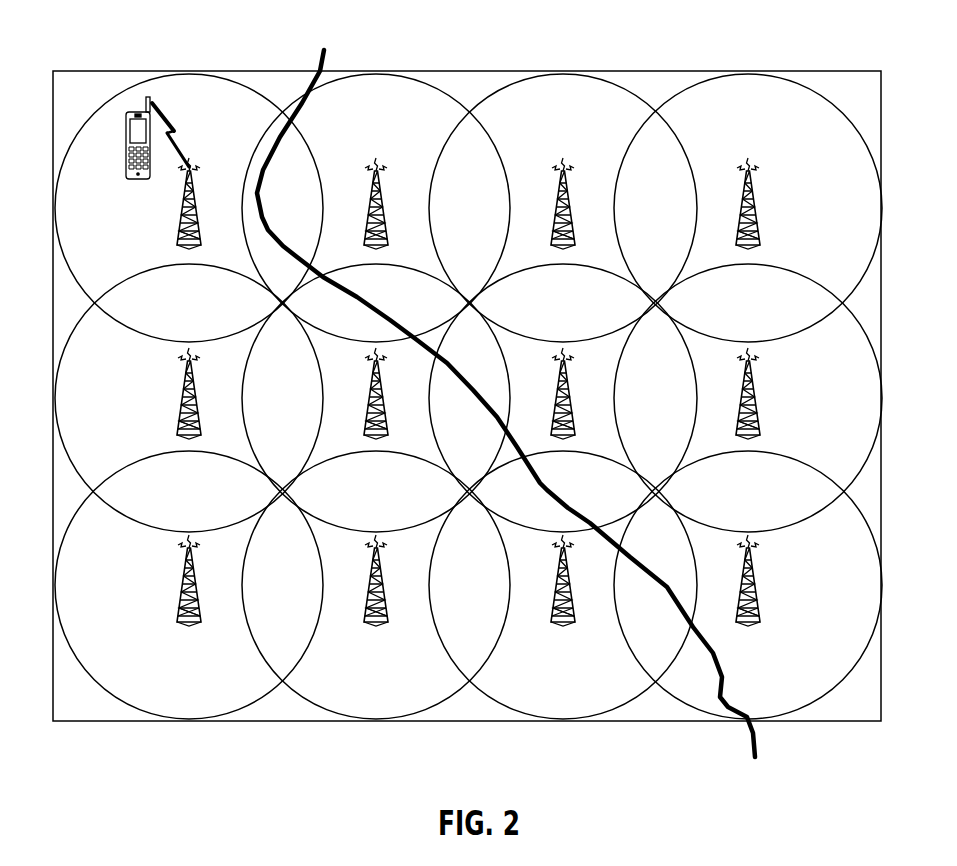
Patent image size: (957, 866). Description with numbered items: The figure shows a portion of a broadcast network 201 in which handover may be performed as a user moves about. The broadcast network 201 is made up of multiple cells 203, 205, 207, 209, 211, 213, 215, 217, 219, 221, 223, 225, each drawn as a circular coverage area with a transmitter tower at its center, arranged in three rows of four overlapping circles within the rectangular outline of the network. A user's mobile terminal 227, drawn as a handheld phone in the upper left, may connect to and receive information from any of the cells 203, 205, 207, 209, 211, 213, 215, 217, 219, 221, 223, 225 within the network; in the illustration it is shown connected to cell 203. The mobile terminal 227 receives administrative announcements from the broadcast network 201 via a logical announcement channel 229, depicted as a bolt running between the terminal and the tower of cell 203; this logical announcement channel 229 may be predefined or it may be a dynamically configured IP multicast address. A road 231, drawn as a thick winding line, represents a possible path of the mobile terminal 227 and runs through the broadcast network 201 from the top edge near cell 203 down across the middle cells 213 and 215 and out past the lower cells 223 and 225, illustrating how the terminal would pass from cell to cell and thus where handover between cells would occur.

The broadcast network 201 is at (858, 721).
The cell 203 is at (235, 71).
The cell 205 is at (425, 71).
The cell 207 is at (605, 71).
The cell 209 is at (788, 71).
The cell 211 is at (63, 337).
The cell 213 is at (355, 263).
The cell 215 is at (563, 262).
The cell 217 is at (872, 448).
The cell 219 is at (148, 721).
The cell 221 is at (335, 721).
The cell 223 is at (520, 721).
The cell 225 is at (708, 721).
The mobile terminal 227 is at (137, 180).
The logical announcement channel 229 is at (167, 120).
The road 231 is at (321, 71).